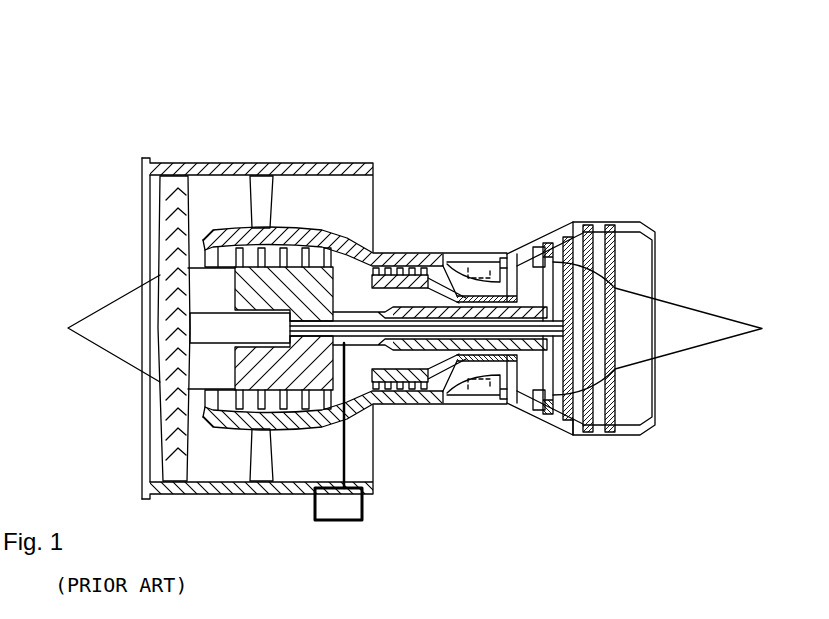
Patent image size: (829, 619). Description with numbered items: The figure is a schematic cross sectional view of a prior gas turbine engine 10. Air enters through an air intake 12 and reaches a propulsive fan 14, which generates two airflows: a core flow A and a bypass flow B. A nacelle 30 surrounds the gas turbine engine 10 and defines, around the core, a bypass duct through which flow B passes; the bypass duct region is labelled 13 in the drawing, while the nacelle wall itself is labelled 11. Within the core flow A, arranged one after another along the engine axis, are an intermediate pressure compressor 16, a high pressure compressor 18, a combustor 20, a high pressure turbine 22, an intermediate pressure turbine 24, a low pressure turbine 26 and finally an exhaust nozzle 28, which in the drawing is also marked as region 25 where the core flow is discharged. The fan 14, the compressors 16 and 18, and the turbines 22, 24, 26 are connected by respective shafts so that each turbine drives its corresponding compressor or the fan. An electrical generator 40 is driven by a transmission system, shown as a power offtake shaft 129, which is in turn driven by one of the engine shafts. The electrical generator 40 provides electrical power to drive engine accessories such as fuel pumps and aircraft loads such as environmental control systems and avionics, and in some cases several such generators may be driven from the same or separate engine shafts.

The gas turbine engine 10 is at (486, 112).
The nacelle / fan casing 11 is at (153, 190).
The air intake 12 is at (173, 240).
The bypass duct 13 is at (347, 212).
The propulsive fan 14 is at (236, 252).
The intermediate pressure compressor 16 is at (435, 252).
The high pressure compressor 18 is at (483, 266).
The combustor 20 is at (517, 253).
The high pressure turbine 22 is at (547, 232).
The intermediate pressure turbine 24 is at (612, 225).
The exhaust nozzle 25 is at (648, 272).
The low pressure turbine 26 is at (201, 330).
The exhaust nozzle 28 is at (416, 372).
The nacelle 30 is at (496, 390).
The electrical generator 40 is at (362, 503).
The power offtake shaft 129 is at (344, 460).